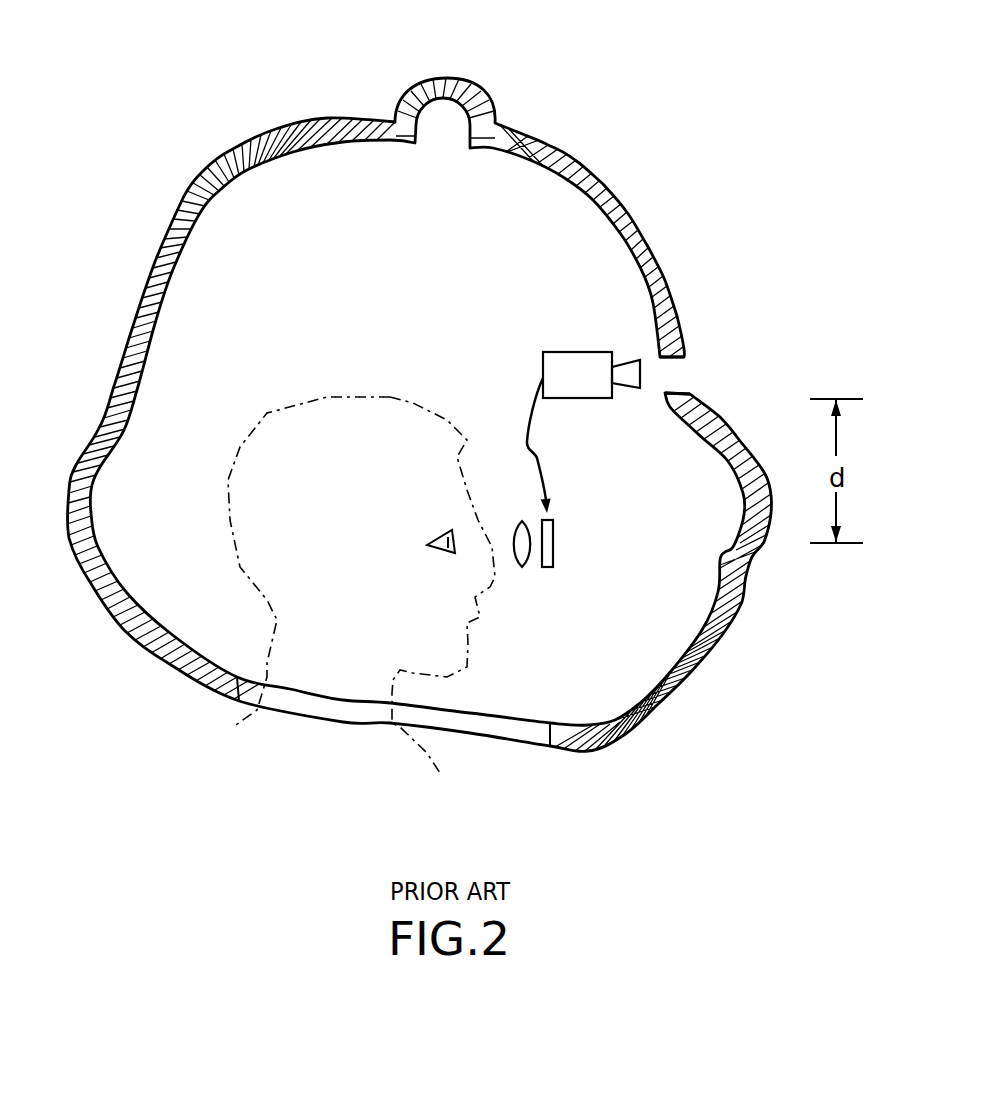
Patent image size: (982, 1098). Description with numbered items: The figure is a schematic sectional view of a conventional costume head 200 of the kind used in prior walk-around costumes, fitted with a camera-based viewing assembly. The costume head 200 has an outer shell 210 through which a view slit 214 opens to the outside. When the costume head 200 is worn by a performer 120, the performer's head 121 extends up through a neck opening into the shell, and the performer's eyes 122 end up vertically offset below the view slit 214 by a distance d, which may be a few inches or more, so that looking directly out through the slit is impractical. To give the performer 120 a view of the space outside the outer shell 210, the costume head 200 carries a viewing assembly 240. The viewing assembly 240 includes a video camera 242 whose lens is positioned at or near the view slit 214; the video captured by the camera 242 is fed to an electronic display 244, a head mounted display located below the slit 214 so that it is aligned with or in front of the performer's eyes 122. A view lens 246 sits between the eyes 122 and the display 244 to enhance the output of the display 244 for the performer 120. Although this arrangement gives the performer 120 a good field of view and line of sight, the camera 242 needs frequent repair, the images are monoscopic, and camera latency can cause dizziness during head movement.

The costume head 200 is at (461, 376).
The outer shell 210 is at (233, 150).
The view slit 214 is at (700, 377).
The performer 120 is at (311, 529).
The head 121 is at (230, 507).
The eyes 122 is at (457, 539).
The viewing assembly 240 is at (540, 457).
The video camera 242 is at (575, 338).
The electronic display 244 is at (556, 546).
The view lens 246 is at (522, 586).